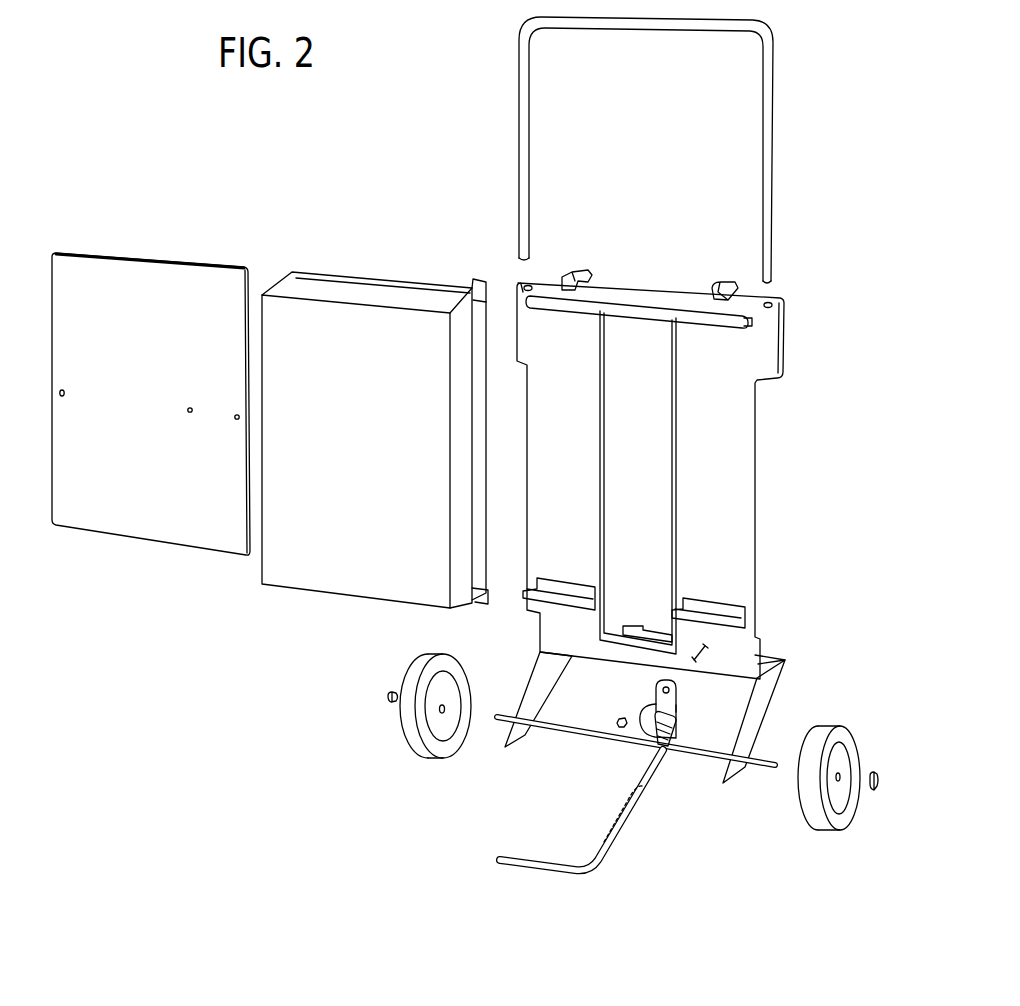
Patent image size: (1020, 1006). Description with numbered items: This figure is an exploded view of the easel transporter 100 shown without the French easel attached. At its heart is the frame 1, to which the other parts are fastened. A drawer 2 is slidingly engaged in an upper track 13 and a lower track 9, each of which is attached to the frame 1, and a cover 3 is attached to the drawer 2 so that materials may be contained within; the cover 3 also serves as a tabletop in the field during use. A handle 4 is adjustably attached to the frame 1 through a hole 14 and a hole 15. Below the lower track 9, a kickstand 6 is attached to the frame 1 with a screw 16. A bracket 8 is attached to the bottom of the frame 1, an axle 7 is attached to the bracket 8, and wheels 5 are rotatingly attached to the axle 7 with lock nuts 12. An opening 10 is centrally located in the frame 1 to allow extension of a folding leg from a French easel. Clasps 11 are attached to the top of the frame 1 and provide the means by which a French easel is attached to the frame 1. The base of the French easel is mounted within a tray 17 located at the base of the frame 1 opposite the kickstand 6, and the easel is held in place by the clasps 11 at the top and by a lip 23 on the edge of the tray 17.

The frame 1 is at (783, 340).
The drawer 2 is at (355, 272).
The cover 3 is at (146, 256).
The handle 4 is at (773, 150).
The wheels 5 is at (412, 672).
The kickstand 6 is at (633, 825).
The axle 7 is at (577, 748).
The bracket 8 is at (770, 700).
The lower track 9 is at (733, 600).
The opening 10 is at (640, 483).
The clasps 11 is at (564, 270).
The lock nuts 12 is at (388, 705).
The upper track 13 is at (711, 325).
The hole 14 is at (770, 300).
The hole 15 is at (526, 283).
The screw 16 is at (622, 716).
The tray 17 is at (773, 652).
The lip 23 is at (640, 628).
The easel transporter 100 is at (797, 472).